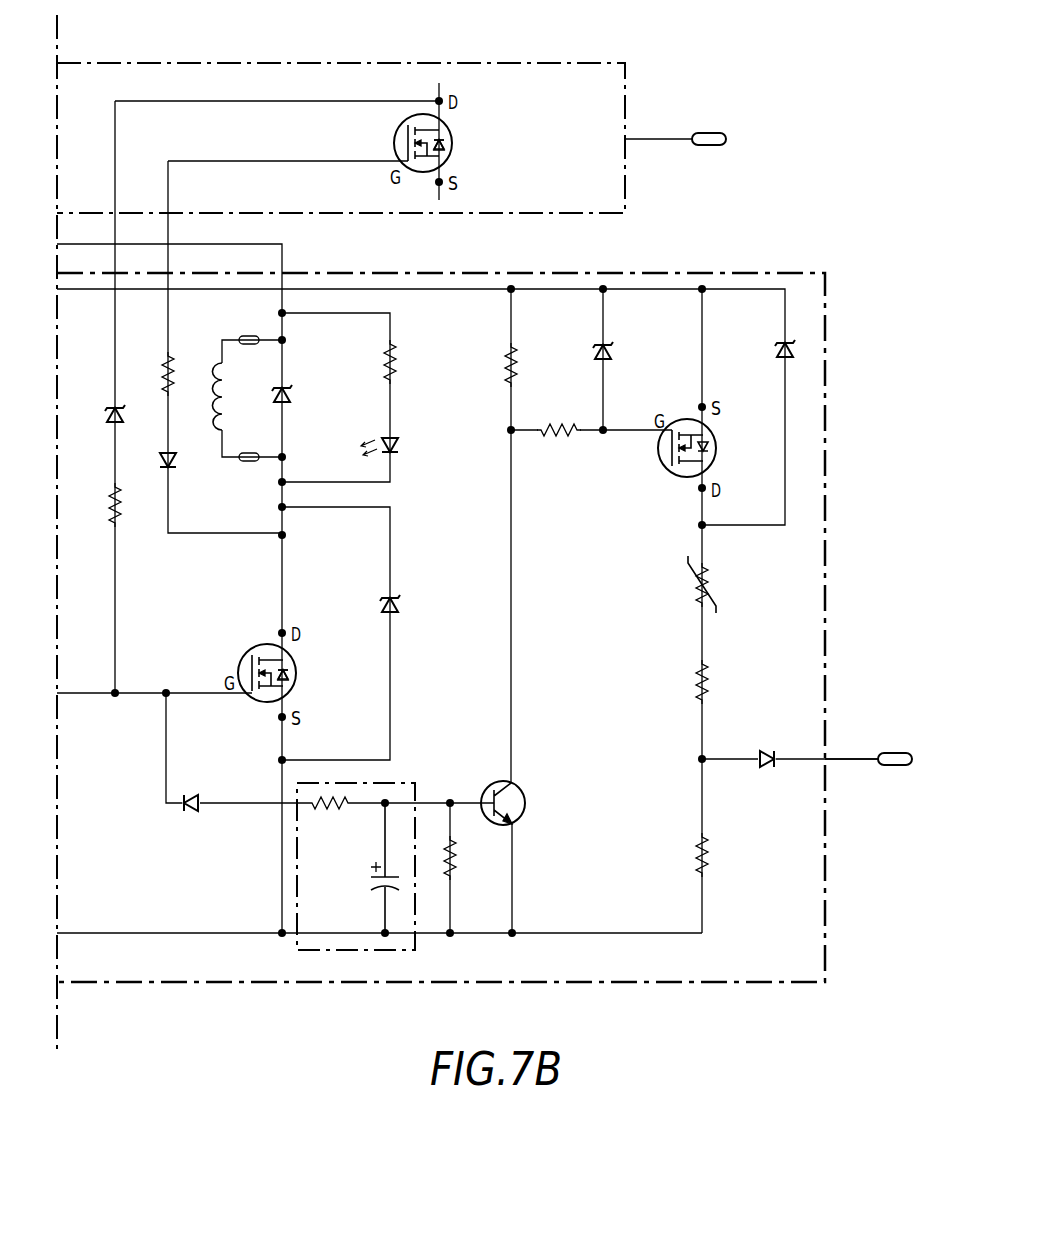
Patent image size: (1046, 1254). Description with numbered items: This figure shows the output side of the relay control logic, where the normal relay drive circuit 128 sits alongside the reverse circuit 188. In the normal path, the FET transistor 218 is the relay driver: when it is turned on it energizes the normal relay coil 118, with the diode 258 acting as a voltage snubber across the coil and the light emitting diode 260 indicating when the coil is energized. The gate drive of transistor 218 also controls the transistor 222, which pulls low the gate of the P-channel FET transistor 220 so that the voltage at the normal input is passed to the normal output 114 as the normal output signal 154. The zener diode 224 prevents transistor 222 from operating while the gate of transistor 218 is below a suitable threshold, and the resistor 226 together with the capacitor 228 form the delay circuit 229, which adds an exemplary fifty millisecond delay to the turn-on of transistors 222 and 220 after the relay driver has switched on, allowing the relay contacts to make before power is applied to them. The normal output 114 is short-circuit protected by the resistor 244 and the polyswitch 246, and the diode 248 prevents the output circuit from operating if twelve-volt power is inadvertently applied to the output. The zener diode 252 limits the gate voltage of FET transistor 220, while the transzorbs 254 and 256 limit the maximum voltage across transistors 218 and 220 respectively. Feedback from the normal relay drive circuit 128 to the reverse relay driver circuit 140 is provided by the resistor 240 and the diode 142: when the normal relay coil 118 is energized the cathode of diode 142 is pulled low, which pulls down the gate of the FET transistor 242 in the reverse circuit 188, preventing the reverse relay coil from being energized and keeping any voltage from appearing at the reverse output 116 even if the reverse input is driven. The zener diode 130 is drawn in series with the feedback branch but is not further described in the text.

The reverse circuit 188 is at (575, 63).
The reverse relay driver circuit 140 is at (465, 125).
The FET transistor 242 is at (452, 150).
The reverse output 116 is at (727, 143).
The zener diode 130 is at (112, 410).
The resistor 240 is at (166, 360).
The diode 142 is at (172, 464).
The normal relay coil 118 is at (212, 362).
The diode 258 is at (297, 397).
The light emitting diode 260 is at (400, 444).
The transzorb 254 is at (402, 608).
The zener diode 252 is at (609, 360).
The transzorb 256 is at (775, 351).
The FET transistor 220 is at (663, 468).
The polyswitch 246 is at (690, 597).
The resistor 244 is at (697, 680).
The diode 248 is at (760, 752).
The normal output signal 154 is at (850, 762).
The normal output 114 is at (895, 766).
The normal relay drive circuit 128 is at (239, 643).
The FET transistor 218 is at (296, 677).
The zener diode 224 is at (187, 810).
The delay circuit 229 is at (410, 782).
The resistor 226 is at (315, 808).
The capacitor 228 is at (372, 885).
The transistor 222 is at (525, 795).